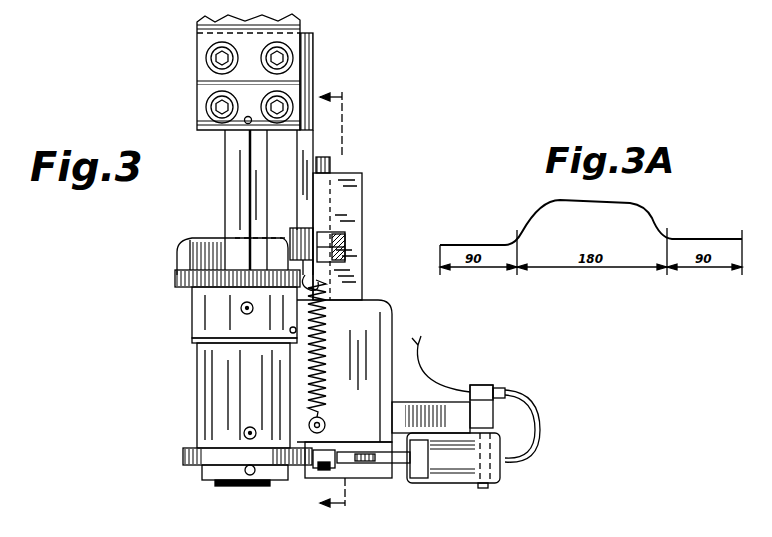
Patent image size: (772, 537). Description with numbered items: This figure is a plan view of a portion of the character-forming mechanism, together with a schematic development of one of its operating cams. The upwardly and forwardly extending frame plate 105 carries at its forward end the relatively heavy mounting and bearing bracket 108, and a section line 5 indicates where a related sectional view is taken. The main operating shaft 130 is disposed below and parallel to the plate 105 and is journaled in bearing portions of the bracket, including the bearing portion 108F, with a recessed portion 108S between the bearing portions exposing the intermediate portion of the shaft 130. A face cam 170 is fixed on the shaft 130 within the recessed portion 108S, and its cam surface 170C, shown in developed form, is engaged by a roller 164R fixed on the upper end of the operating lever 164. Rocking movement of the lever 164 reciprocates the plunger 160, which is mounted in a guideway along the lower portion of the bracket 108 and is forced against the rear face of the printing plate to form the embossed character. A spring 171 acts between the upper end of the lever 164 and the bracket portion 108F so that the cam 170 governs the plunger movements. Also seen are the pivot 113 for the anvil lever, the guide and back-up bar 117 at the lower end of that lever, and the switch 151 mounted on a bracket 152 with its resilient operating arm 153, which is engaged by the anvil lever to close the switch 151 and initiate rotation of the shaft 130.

In FIG. 3, the frame plate 105 is at (197, 30).
In FIG. 3, the mounting and bearing bracket 108 is at (318, 58).
In FIG. 3, the section line 5- 5 is at (338, 303).
In FIG. 3, the recessed portion 108S is at (305, 145).
In FIG. 3, the plunger 160 is at (331, 165).
In FIG. 3, the main operating shaft 130 is at (236, 200).
In FIG. 3, the roller 164R is at (300, 229).
In FIG. 3, the operating lever 164 is at (330, 239).
In FIG. 3, the cam surface 170C is at (188, 243).
In FIG. 3A, the cam surface 170C is at (648, 210).
In FIG. 3, the face cam 170 is at (178, 290).
In FIG. 3, the spring 171 is at (326, 354).
In FIG. 3, the bearing portion 108F is at (205, 400).
In FIG. 3, the bracket 152 is at (430, 393).
In FIG. 3, the resilient operating arm 153 is at (360, 458).
In FIG. 3, the pivot 113 is at (318, 466).
In FIG. 3, the guide and back-up bar 117 is at (383, 472).
In FIG. 3, the switch 151 is at (445, 482).